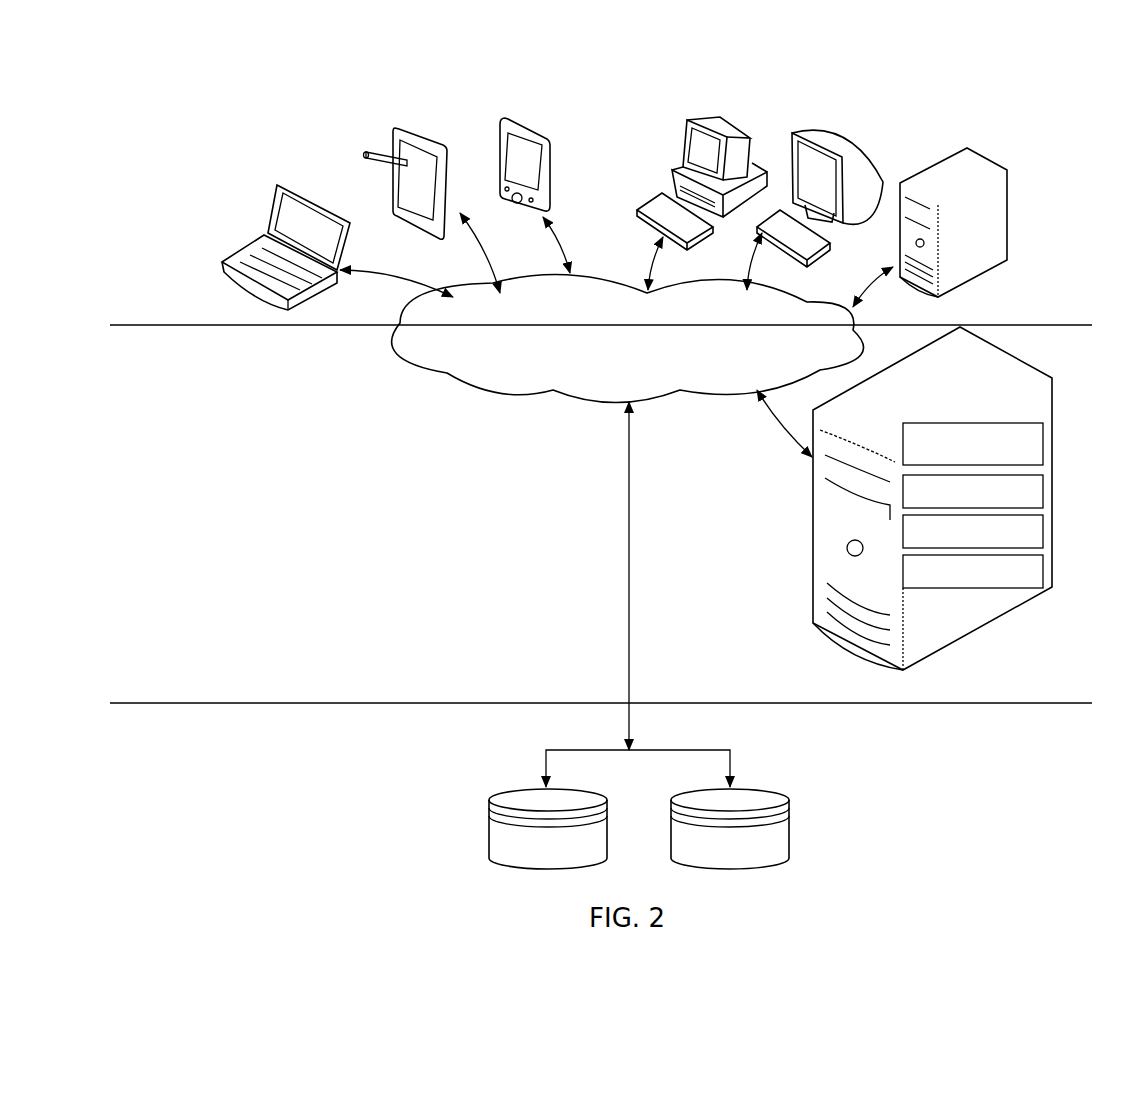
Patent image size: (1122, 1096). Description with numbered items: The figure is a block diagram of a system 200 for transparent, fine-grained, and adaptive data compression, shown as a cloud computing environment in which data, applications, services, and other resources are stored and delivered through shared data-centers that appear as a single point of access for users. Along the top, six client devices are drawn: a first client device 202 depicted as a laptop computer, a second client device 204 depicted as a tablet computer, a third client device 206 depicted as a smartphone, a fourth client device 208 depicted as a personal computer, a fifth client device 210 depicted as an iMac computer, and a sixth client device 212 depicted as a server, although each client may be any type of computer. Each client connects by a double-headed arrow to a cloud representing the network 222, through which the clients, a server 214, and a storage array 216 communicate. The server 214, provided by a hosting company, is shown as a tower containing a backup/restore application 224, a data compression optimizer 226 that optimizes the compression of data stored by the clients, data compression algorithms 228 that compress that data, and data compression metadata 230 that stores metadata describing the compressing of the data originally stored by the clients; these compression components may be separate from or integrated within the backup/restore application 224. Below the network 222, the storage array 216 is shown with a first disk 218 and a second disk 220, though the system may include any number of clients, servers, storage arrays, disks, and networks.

The system 200 is at (617, 90).
The first client device 202 is at (281, 187).
The second client device 204 is at (403, 127).
The third client device 206 is at (508, 117).
The fourth client device 208 is at (683, 120).
The fifth client device 210 is at (807, 127).
The sixth client device 212 is at (967, 150).
The server 214 is at (899, 512).
The storage array 216 is at (761, 635).
The first disk 218 is at (503, 790).
The second disk 220 is at (680, 790).
The network 222 is at (628, 339).
The backup/restore application 224 is at (973, 444).
The data compression optimizer 226 is at (973, 491).
The data compression algorithms 228 is at (973, 531).
The data compression metadata 230 is at (973, 571).